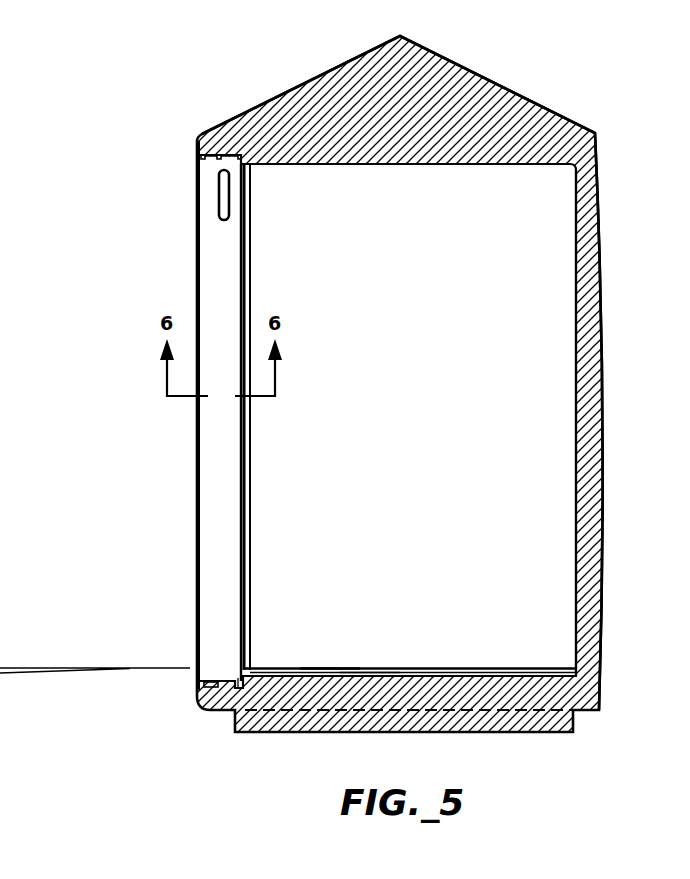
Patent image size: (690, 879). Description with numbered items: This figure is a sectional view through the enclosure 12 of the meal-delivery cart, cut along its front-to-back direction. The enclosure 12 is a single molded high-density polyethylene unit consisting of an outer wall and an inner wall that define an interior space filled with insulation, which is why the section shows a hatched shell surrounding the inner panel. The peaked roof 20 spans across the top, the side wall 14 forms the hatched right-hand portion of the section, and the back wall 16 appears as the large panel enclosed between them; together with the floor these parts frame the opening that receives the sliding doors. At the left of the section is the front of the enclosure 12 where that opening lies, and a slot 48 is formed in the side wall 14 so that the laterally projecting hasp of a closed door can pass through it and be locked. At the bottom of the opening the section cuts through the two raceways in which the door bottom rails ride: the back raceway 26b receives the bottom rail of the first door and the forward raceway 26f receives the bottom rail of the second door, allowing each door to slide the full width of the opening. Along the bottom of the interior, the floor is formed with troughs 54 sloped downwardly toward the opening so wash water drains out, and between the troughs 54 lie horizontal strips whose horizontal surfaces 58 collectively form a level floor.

The enclosure 12 is at (612, 581).
The side wall 14 is at (598, 207).
The back wall 16 is at (425, 434).
The roof 20 is at (273, 98).
The slot 48 is at (217, 195).
The trough 54 is at (325, 671).
The horizontal surface 58 is at (369, 665).
The forward raceway 26f is at (205, 686).
The back raceway 26b is at (238, 690).